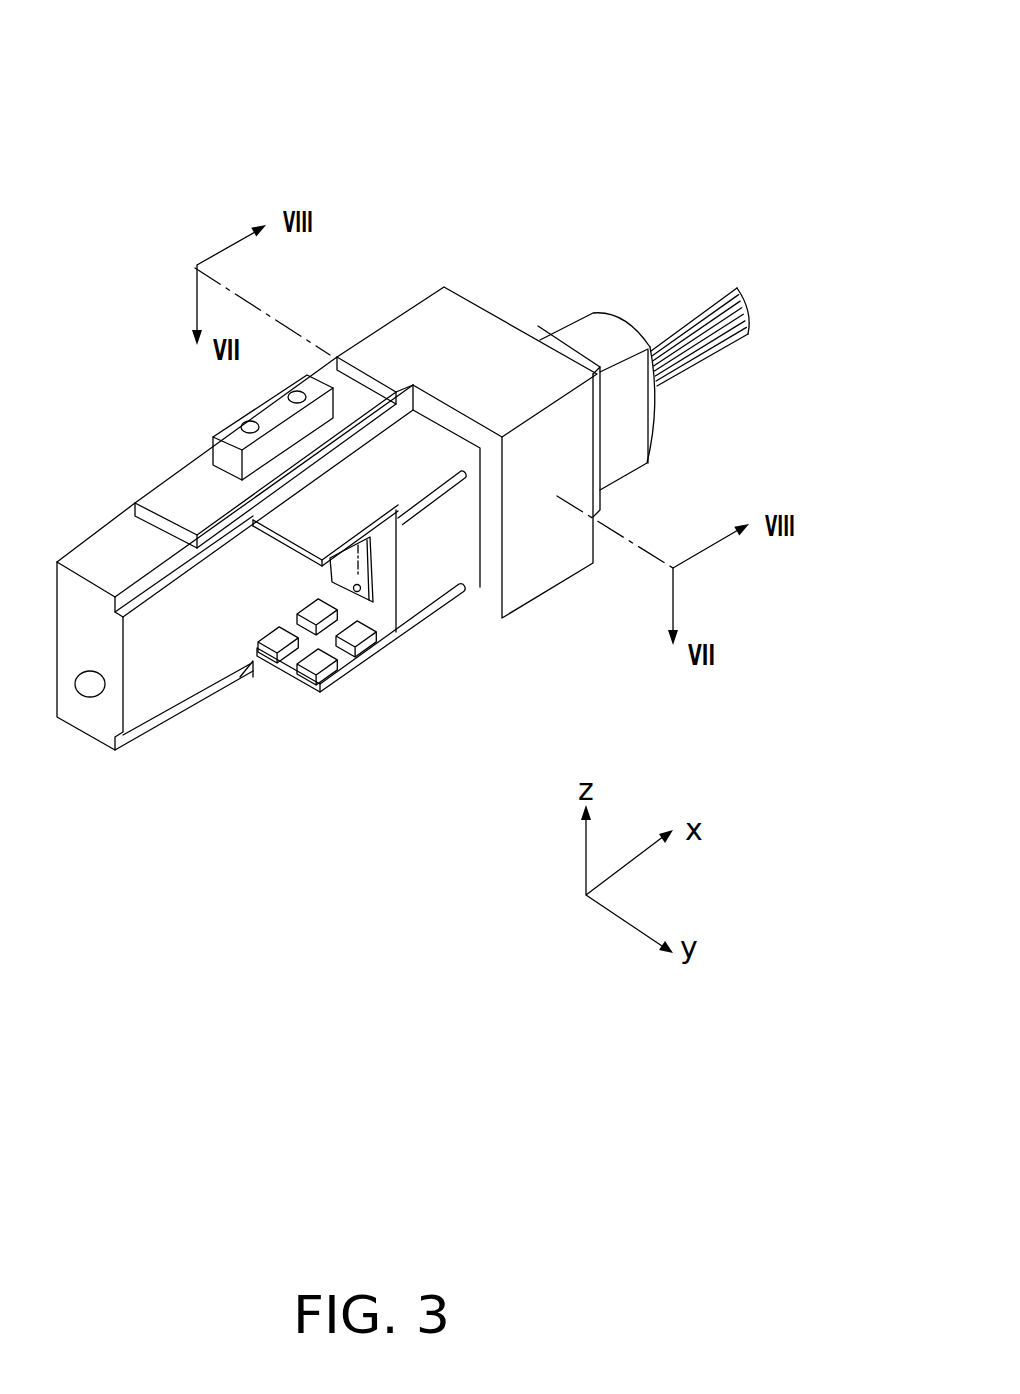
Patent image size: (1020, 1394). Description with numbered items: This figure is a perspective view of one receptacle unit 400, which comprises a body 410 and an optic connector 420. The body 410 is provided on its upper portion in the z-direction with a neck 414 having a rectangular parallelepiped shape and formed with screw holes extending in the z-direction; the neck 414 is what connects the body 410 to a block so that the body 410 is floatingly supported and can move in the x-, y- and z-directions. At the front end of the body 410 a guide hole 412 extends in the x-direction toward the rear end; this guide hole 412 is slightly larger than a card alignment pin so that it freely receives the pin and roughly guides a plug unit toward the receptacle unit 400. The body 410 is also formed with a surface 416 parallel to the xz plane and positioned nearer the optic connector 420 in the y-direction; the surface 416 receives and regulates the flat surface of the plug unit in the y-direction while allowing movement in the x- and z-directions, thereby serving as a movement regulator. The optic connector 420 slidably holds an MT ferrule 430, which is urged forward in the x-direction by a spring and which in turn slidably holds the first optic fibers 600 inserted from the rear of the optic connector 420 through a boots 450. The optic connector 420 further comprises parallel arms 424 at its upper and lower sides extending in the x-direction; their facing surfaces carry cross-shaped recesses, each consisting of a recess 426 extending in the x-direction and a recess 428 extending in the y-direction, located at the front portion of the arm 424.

The receptacle unit 400 is at (449, 128).
The body 410 is at (401, 327).
The guide hole 412 is at (93, 690).
The neck 414 is at (253, 417).
The surface 416 is at (173, 680).
The optic connector 420 is at (600, 496).
The arms 424 is at (300, 527).
The recess 426 is at (280, 670).
The recess 428 is at (357, 648).
The MT ferrule 430 is at (363, 573).
The boots 450 is at (602, 332).
The first optic fibers 600 is at (735, 338).